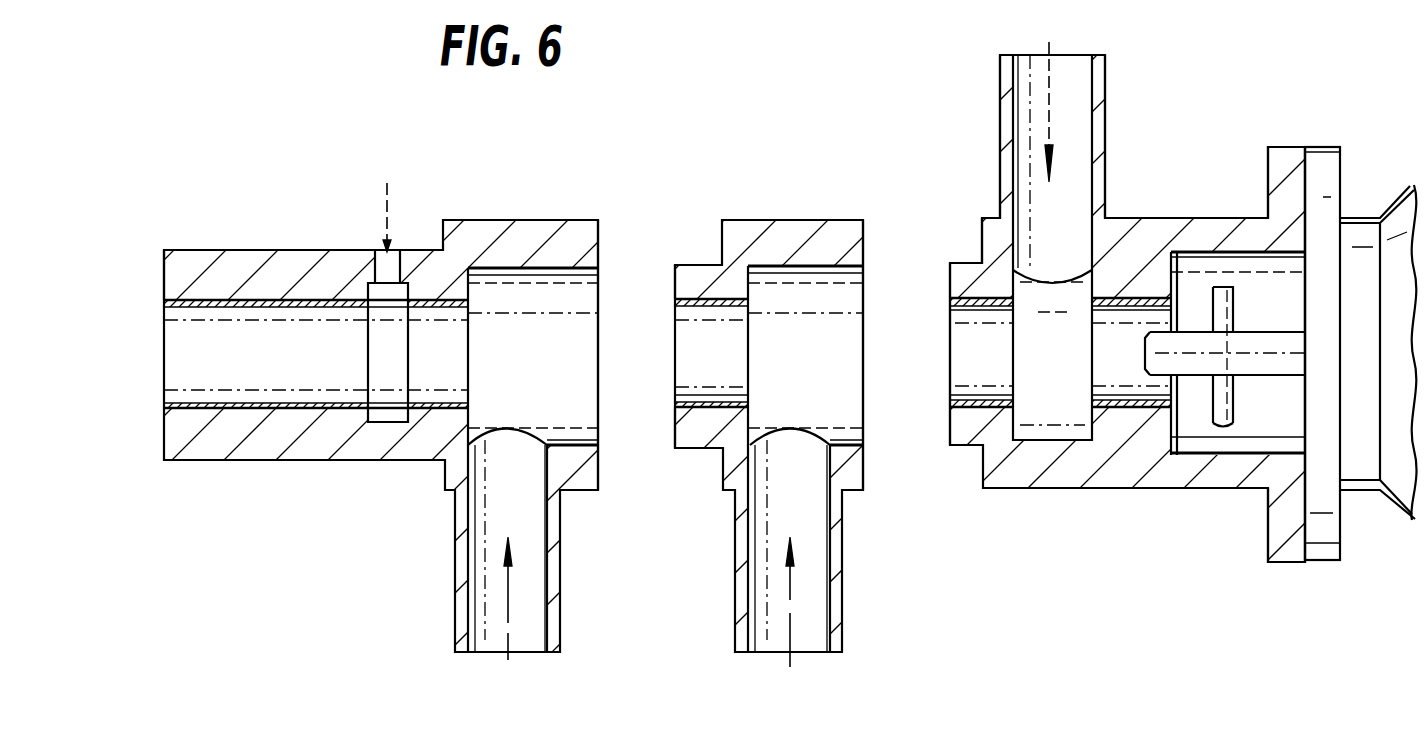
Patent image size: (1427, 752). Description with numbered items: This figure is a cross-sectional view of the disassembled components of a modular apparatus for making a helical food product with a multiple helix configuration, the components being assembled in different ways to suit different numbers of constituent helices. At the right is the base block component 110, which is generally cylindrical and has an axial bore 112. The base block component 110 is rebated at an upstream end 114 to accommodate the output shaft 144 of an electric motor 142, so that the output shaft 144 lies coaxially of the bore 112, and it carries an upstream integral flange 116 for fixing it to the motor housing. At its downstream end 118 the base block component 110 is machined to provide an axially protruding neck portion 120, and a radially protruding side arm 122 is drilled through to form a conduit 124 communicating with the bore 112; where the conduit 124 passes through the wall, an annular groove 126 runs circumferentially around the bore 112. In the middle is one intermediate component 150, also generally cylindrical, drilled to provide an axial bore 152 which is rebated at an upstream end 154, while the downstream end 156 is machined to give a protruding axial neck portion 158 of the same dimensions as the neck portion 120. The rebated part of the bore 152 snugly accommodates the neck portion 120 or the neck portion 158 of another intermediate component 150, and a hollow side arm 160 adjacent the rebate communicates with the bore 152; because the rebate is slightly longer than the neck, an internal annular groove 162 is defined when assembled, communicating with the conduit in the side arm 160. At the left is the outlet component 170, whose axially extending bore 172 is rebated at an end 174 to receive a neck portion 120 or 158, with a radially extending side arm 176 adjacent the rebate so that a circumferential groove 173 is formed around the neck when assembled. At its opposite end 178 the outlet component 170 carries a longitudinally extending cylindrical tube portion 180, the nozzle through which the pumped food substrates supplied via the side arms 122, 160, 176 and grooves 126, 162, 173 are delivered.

The base block component 110 is at (1150, 473).
The axial bore 112 is at (1140, 370).
The upstream end 114 is at (1308, 187).
The integral flange 116 is at (1275, 168).
The downstream end 118 is at (948, 436).
The neck portion 120 is at (948, 283).
The side arm 122 is at (1100, 135).
The conduit 124 is at (1065, 85).
The annular groove 126 is at (1042, 436).
The electric motor 142 is at (1398, 467).
The output shaft 144 is at (1270, 353).
The intermediate component 150 is at (790, 222).
The axial bore 152 is at (738, 370).
The upstream end 154 is at (863, 249).
The downstream end 156 is at (676, 432).
The neck portion 158 is at (688, 266).
The hollow side arm 160 is at (838, 588).
The internal annular groove 162 is at (800, 426).
The outlet component 170 is at (483, 228).
The axially extending bore 172 is at (318, 370).
The circumferential groove 173 is at (535, 428).
The upstream end 174 is at (598, 237).
The side arm 176 is at (556, 576).
The upstream end 178 is at (164, 258).
The cylindrical tube portion 180 is at (205, 447).